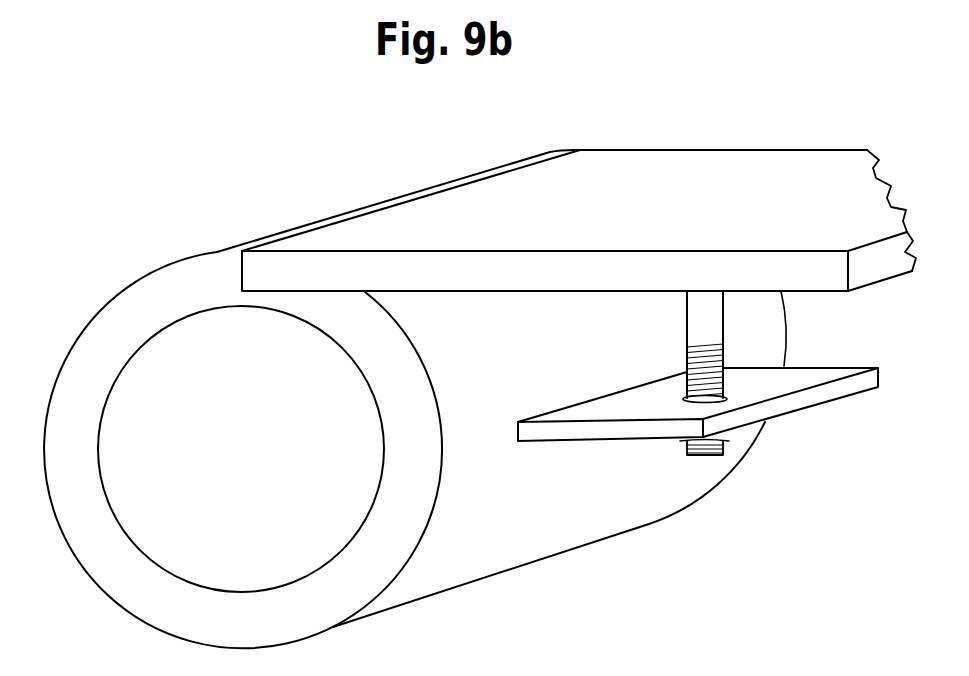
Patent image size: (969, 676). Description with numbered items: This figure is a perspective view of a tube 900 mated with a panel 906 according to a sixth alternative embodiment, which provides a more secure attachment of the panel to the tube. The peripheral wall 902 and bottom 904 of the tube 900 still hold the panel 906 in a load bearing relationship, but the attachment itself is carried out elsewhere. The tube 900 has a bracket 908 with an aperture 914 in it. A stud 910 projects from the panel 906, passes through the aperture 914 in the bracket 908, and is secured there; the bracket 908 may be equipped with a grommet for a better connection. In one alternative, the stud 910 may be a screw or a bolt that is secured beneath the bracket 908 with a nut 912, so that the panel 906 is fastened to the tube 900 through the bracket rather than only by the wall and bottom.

The tube 900 is at (173, 241).
The peripheral wall 902 is at (245, 272).
The bottom 904 is at (297, 292).
The panel 906 is at (748, 168).
The bracket 908 is at (825, 395).
The stud 910 is at (683, 345).
The nut 912 is at (728, 437).
The aperture 914 is at (683, 402).